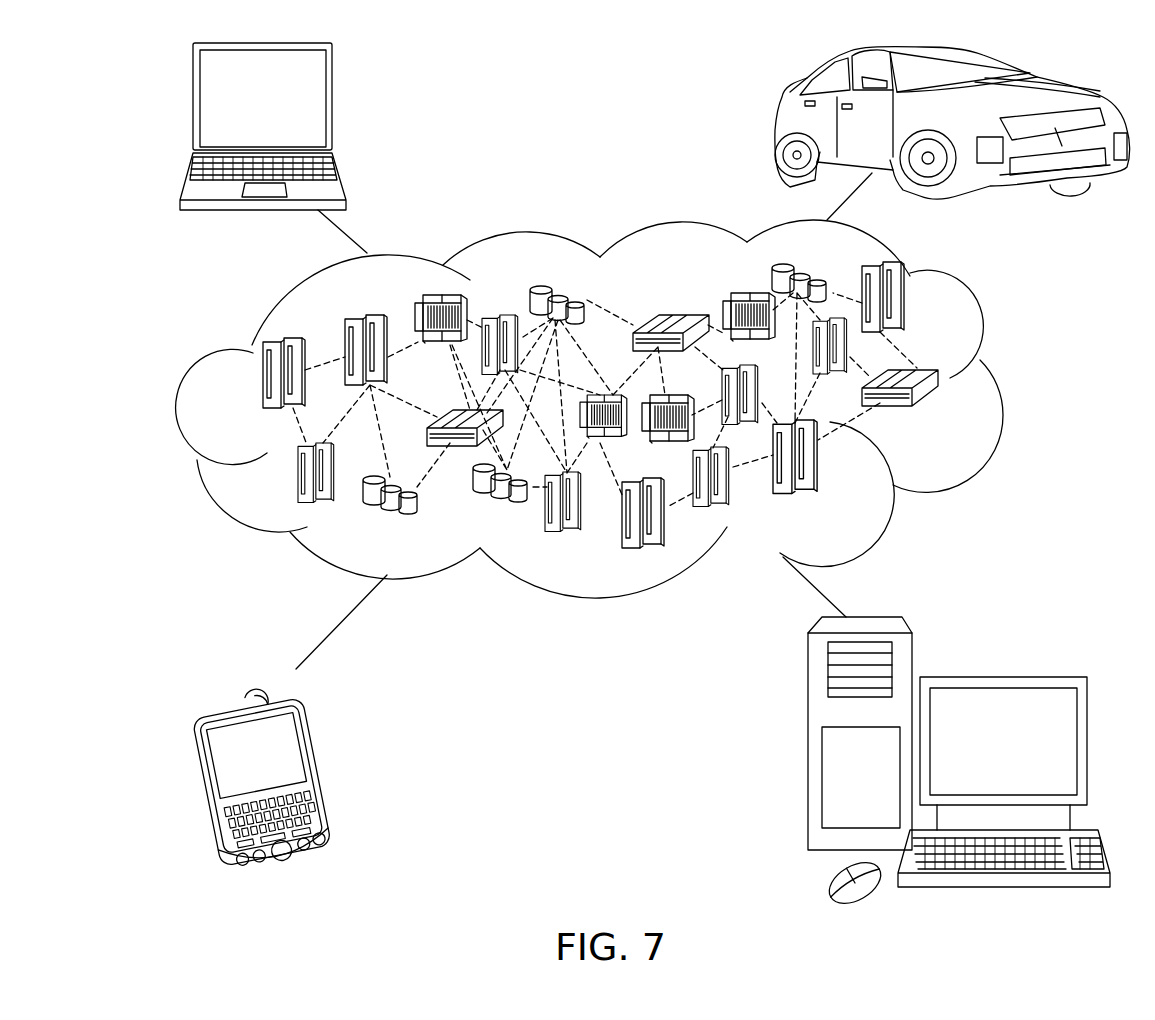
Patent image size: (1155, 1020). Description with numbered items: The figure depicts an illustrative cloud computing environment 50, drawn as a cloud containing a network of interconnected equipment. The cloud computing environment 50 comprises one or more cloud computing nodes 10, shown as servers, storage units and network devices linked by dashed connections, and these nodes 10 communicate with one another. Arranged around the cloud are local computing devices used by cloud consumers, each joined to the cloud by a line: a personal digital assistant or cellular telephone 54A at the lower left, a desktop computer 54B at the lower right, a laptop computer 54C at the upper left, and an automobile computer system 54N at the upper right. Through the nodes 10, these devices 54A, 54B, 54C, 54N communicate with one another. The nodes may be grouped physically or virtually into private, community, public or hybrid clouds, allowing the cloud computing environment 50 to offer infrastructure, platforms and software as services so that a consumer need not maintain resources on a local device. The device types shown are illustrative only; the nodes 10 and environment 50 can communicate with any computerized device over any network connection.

The cloud computing nodes 10 is at (948, 417).
The cloud computing environment 50 is at (1002, 382).
The personal digital assistant or cellular telephone 54A is at (322, 770).
The desktop computer 54B is at (1000, 675).
The laptop computer 54C is at (332, 103).
The automobile computer system 54N is at (775, 121).